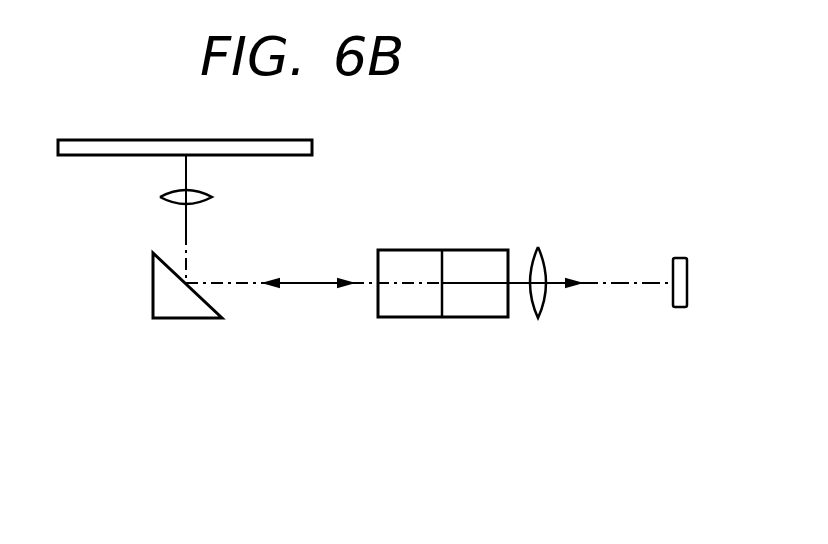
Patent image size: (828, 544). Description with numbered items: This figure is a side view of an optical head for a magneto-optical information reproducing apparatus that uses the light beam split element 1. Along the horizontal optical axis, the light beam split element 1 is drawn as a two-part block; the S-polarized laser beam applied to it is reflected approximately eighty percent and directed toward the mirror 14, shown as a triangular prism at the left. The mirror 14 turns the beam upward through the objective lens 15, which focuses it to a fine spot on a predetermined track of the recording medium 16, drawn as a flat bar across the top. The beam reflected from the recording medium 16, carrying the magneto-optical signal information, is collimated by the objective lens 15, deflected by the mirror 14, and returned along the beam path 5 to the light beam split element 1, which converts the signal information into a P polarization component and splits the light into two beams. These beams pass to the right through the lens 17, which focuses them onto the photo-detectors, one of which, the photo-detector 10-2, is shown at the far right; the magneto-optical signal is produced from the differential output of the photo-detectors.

The recording medium 16 is at (312, 146).
The objective lens 15 is at (212, 197).
The mirror 14 is at (195, 318).
The light beam 5 is at (307, 284).
The light beam split element 1 is at (472, 250).
The lens 17 is at (544, 316).
The photo-detector 10-2 is at (680, 307).